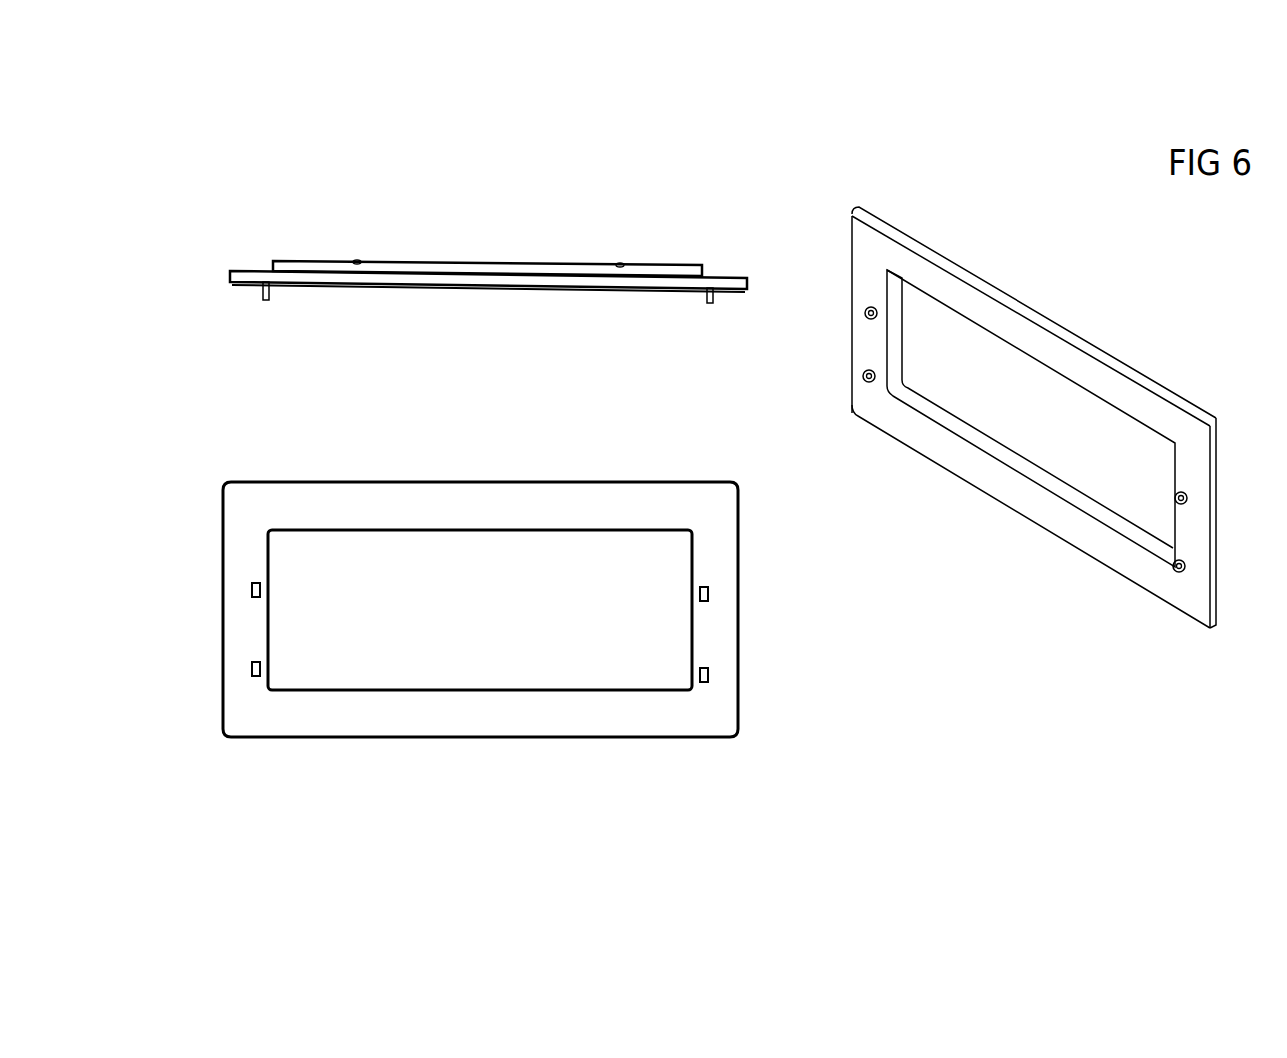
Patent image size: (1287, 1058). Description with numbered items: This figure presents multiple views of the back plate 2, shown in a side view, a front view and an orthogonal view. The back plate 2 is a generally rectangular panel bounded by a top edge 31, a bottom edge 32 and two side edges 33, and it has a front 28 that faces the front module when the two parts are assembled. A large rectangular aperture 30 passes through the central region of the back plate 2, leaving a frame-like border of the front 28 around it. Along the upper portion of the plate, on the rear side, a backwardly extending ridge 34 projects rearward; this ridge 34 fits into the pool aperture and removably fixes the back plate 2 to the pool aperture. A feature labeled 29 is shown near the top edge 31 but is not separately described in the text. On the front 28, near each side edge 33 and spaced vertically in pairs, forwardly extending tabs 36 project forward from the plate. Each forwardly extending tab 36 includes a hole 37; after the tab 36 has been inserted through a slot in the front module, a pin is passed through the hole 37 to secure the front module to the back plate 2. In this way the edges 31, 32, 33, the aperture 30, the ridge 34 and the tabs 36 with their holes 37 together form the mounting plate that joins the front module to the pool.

The back plate 2 is at (724, 324).
The front 28 is at (437, 289).
The top edge 29 is at (722, 274).
The aperture 30 is at (823, 445).
The top edge 31 is at (512, 283).
The bottom edge 32 is at (497, 740).
The side edges 33 is at (228, 282).
The backwardly extending ridge 34 is at (435, 262).
The forwardly extending tabs 36 is at (263, 300).
The hole 37 is at (876, 318).